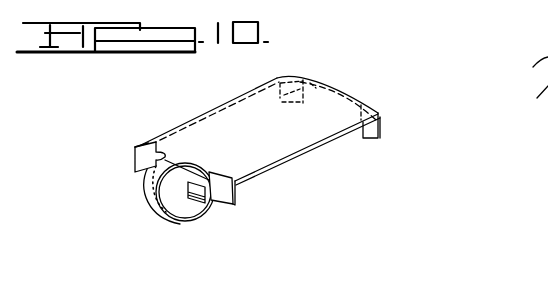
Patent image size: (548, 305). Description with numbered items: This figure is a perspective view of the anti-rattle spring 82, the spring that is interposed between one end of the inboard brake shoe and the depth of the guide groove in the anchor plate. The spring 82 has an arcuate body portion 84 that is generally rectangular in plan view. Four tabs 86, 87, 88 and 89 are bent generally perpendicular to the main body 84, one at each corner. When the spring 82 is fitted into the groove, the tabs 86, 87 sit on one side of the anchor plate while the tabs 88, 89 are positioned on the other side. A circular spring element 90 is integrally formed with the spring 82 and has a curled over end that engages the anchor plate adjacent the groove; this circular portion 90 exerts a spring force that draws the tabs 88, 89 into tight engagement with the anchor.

The anti-rattle spring 82 is at (233, 100).
The arcuate body portion 84 is at (283, 140).
The tab 86 is at (143, 160).
The tab 87 is at (224, 207).
The tab 88 is at (322, 82).
The tab 89 is at (379, 123).
The circular spring element 90 is at (145, 208).